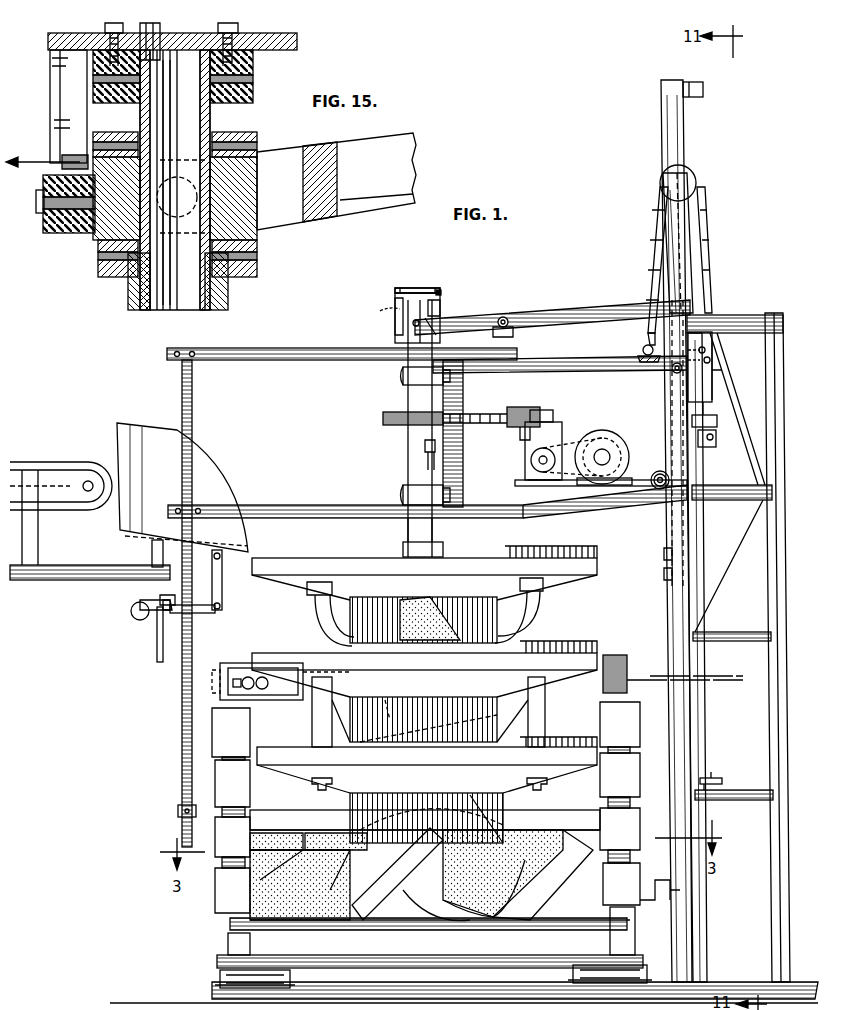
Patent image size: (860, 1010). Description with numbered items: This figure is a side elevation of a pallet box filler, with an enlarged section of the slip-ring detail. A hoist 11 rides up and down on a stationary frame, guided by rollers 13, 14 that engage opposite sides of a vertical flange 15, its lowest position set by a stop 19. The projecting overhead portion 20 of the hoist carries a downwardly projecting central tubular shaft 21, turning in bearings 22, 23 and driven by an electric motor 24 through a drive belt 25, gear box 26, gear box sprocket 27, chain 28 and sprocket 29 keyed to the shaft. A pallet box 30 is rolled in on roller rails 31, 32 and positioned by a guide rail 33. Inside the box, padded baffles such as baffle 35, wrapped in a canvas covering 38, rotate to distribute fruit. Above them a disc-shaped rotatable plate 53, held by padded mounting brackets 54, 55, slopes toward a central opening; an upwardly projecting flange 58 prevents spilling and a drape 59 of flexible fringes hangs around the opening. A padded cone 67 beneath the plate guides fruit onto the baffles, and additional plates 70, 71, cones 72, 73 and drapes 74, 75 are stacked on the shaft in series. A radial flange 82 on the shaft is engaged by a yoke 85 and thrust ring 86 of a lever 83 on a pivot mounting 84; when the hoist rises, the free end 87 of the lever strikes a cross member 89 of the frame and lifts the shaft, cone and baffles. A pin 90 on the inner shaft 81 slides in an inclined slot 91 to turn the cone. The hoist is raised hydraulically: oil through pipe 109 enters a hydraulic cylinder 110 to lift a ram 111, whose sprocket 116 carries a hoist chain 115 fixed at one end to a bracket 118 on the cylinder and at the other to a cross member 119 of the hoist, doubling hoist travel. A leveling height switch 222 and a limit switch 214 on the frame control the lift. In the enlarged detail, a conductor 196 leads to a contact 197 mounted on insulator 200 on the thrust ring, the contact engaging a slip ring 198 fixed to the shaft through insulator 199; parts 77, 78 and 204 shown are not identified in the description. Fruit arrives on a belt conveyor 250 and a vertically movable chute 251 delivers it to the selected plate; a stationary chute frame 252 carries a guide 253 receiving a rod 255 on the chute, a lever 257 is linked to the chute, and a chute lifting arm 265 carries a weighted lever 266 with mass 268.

In FIG. 1, the hoist 11 is at (576, 360).
In FIG. 1, the roller 13 is at (662, 375).
In FIG. 1, the roller 14 is at (652, 474).
In FIG. 1, the vertical flange 15 is at (661, 135).
In FIG. 1, the stop 19 is at (668, 534).
In FIG. 1, the projecting overhead portion 20 is at (334, 342).
In FIG. 15, the central tubular shaft 21 is at (128, 292).
In FIG. 1, the central tubular shaft 21 is at (408, 448).
In FIG. 1, the bearing 22 is at (403, 378).
In FIG. 1, the bearing 23 is at (403, 494).
In FIG. 1, the electric motor 24 is at (600, 430).
In FIG. 1, the drive belt 25 is at (556, 452).
In FIG. 1, the gear box 26 is at (562, 430).
In FIG. 1, the gear box sprocket 27 is at (524, 407).
In FIG. 1, the chain 28 is at (482, 413).
In FIG. 1, the sprocket 29 is at (390, 418).
In FIG. 1, the pallet box 30 is at (640, 735).
In FIG. 1, the roller rail 31 is at (215, 980).
In FIG. 1, the roller rail 32 is at (646, 965).
In FIG. 1, the guide rail 33 is at (650, 880).
In FIG. 1, the baffle 35 is at (445, 875).
In FIG. 1, the canvas covering 38 is at (443, 890).
In FIG. 1, the rotatable plate 53 is at (300, 782).
In FIG. 1, the padded mounting bracket 54 is at (312, 720).
In FIG. 1, the padded mounting bracket 55 is at (545, 712).
In FIG. 1, the upwardly projecting flange 58 is at (283, 755).
In FIG. 1, the drape 59 is at (503, 828).
In FIG. 1, the padded cone 67 is at (352, 828).
In FIG. 1, the plate 70 is at (575, 652).
In FIG. 1, the plate 71 is at (580, 556).
In FIG. 1, the cone 72 is at (386, 702).
In FIG. 1, the cone 73 is at (428, 635).
In FIG. 1, the drape 74 is at (432, 712).
In FIG. 1, the drape 75 is at (468, 600).
In FIG. 1, the handle 77 is at (318, 620).
In FIG. 1, the handle 78 is at (537, 612).
In FIG. 15, the shaft 81 is at (175, 298).
In FIG. 1, the shaft 81 is at (435, 302).
In FIG. 15, the radial flange 82 is at (243, 131).
In FIG. 1, the radial flange 82 is at (437, 315).
In FIG. 15, the lever 83 is at (368, 143).
In FIG. 1, the lever 83 is at (525, 313).
In FIG. 1, the pivot mounting 84 is at (510, 330).
In FIG. 15, the yoke 85 is at (290, 157).
In FIG. 1, the yoke 85 is at (434, 330).
In FIG. 15, the thrust ring 86 is at (250, 192).
In FIG. 1, the thrust ring 86 is at (400, 333).
In FIG. 1, the free end 87 is at (730, 312).
In FIG. 1, the cross member 89 is at (703, 90).
In FIG. 1, the pin 90 is at (425, 447).
In FIG. 1, the inclined slot 91 is at (428, 462).
In FIG. 1, the pipe 109 is at (710, 776).
In FIG. 1, the hydraulic cylinder 110 is at (700, 540).
In FIG. 1, the ram 111 is at (690, 262).
In FIG. 1, the hoist chain 115 is at (706, 290).
In FIG. 1, the sprocket 116 is at (688, 170).
In FIG. 1, the bracket 118 is at (708, 446).
In FIG. 1, the cross member 119 is at (642, 350).
In FIG. 15, the conductor 196 is at (29, 160).
In FIG. 15, the contact 197 is at (50, 85).
In FIG. 1, the contact 197 is at (395, 305).
In FIG. 15, the slip ring 198 is at (297, 40).
In FIG. 1, the slip ring 198 is at (438, 290).
In FIG. 15, the insulator 199 is at (253, 58).
In FIG. 1, the insulator 199 is at (396, 292).
In FIG. 15, the insulator 200 is at (68, 230).
In FIG. 15, the post 204 is at (161, 42).
In FIG. 1, the limit switch 214 is at (712, 370).
In FIG. 1, the leveling height switch 222 is at (716, 396).
In FIG. 1, the belt conveyor 250 is at (45, 462).
In FIG. 1, the chute 251 is at (200, 488).
In FIG. 1, the stationary chute frame 252 is at (92, 573).
In FIG. 1, the guide 253 is at (152, 585).
In FIG. 1, the rod 255 is at (157, 646).
In FIG. 1, the lever 257 is at (210, 612).
In FIG. 1, the chute lifting arm 265 is at (140, 604).
In FIG. 1, the lever 266 is at (165, 615).
In FIG. 1, the mass 268 is at (132, 615).